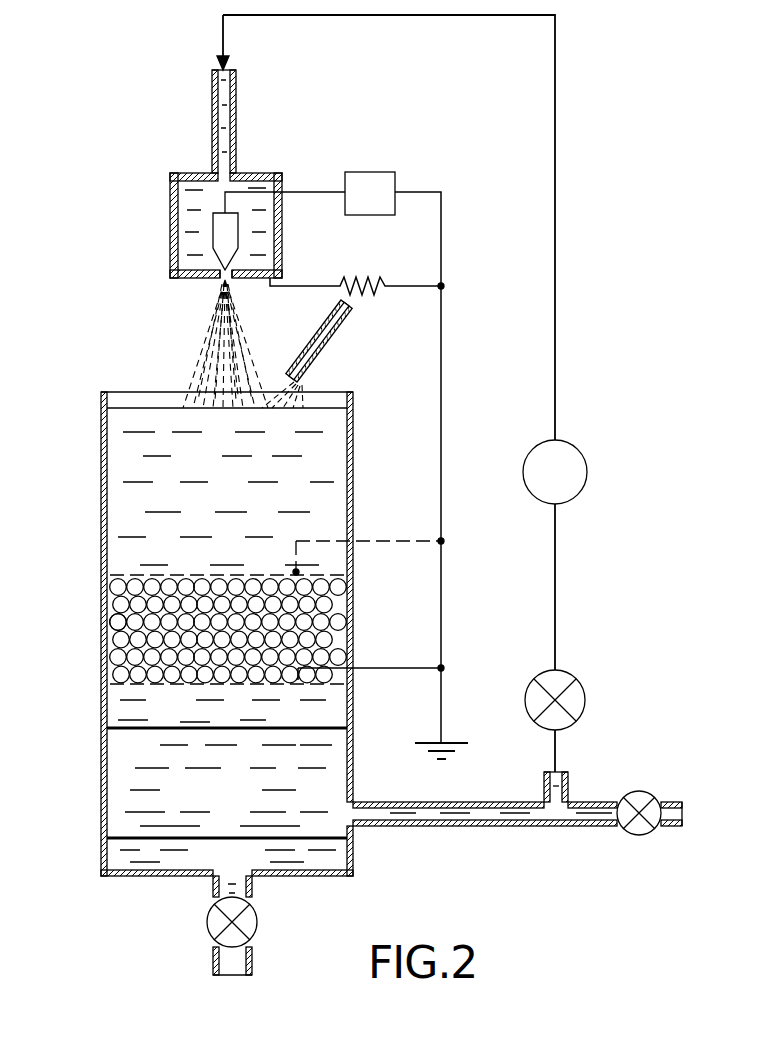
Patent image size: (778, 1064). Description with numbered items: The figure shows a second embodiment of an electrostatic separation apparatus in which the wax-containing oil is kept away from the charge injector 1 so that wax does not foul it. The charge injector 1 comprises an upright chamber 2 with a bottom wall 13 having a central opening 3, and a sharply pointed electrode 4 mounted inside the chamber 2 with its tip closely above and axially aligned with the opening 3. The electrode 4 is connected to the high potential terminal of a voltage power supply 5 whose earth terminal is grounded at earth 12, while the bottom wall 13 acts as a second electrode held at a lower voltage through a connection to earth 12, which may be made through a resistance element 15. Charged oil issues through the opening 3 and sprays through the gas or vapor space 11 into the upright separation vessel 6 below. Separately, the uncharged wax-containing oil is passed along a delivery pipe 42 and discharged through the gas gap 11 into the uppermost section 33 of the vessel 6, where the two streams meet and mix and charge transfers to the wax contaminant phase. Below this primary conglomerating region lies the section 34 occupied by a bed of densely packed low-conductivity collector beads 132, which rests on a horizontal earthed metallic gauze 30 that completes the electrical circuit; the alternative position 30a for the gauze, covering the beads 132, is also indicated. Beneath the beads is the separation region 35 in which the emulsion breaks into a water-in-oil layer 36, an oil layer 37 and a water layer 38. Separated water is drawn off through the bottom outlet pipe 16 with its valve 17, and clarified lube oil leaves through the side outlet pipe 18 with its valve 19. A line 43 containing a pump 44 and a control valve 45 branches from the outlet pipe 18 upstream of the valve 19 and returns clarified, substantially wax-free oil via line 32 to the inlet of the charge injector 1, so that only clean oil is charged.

The charge injector 1 is at (187, 247).
The chamber 2 is at (173, 279).
The central orifice or opening 3 is at (233, 288).
The sharply pointed electrode 4 is at (230, 240).
The voltage power supply 5 is at (356, 173).
The separation vessel 6 is at (103, 752).
The gas or vapor space 11 is at (130, 352).
The earth 12 is at (455, 742).
The bottom wall 13 is at (203, 280).
The resistance element 15 is at (378, 270).
The outlet pipe 16 is at (214, 886).
The valve 17 is at (246, 926).
The outlet pipe 18 is at (678, 802).
The valve 19 is at (650, 832).
The metallic gauze 30 is at (190, 686).
The alternative gauze position 30a is at (157, 575).
The line 32 is at (230, 115).
The uppermost section 33 is at (215, 478).
The section occupied by beads 34 is at (330, 621).
The separation region 35 is at (136, 800).
The water-in-oil layer 36 is at (288, 721).
The oil layer 37 is at (145, 760).
The water layer 38 is at (146, 852).
The delivery pipe 42 is at (335, 345).
The line 43 is at (568, 785).
The pump 44 is at (576, 487).
The control valve 45 is at (583, 693).
The collector beads 132 is at (118, 658).